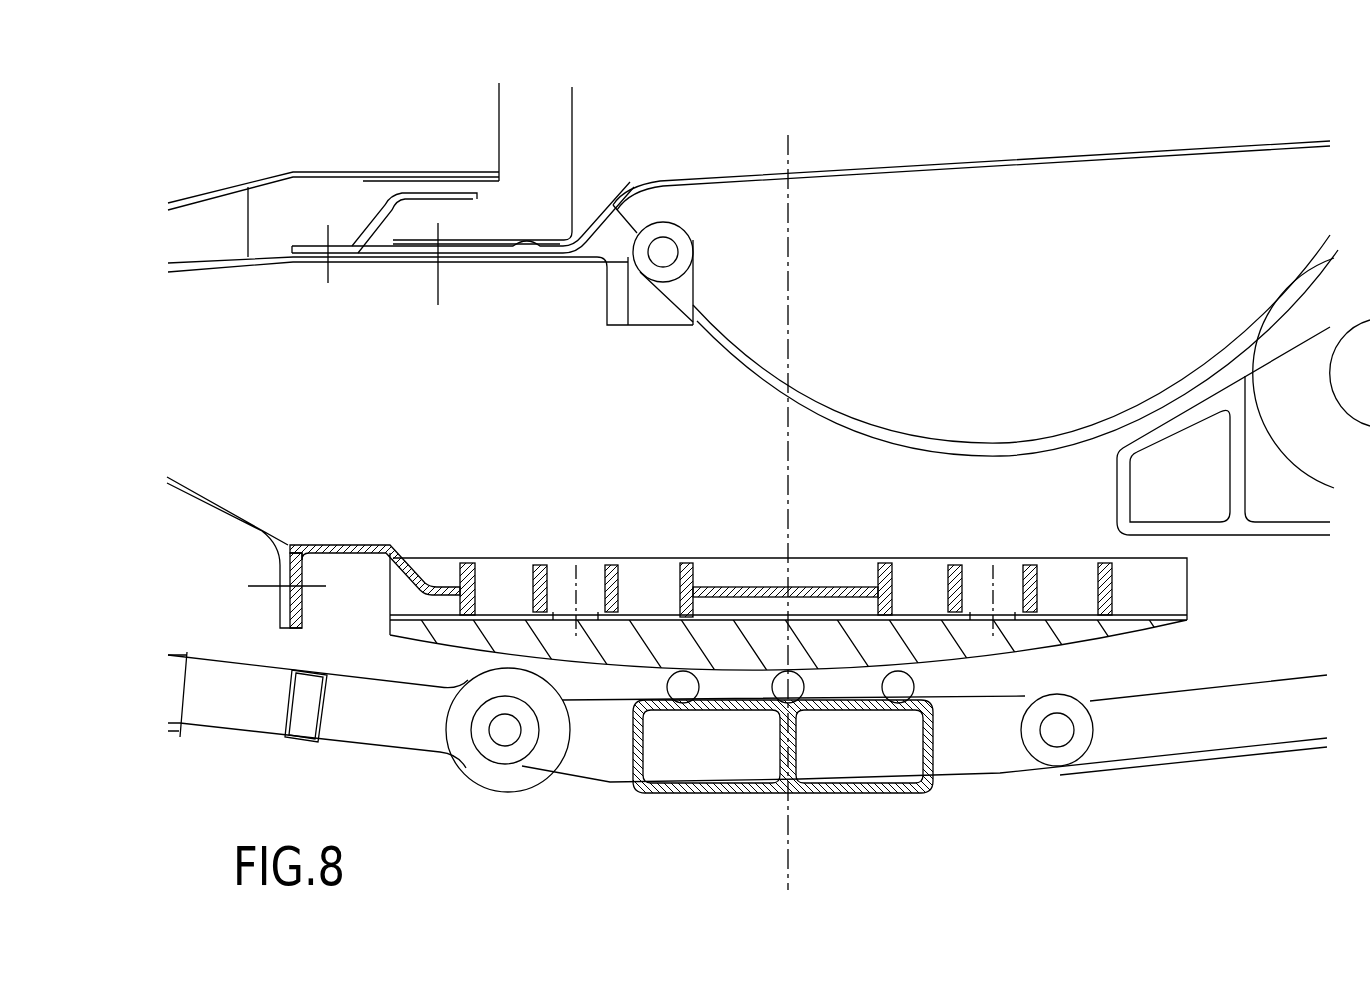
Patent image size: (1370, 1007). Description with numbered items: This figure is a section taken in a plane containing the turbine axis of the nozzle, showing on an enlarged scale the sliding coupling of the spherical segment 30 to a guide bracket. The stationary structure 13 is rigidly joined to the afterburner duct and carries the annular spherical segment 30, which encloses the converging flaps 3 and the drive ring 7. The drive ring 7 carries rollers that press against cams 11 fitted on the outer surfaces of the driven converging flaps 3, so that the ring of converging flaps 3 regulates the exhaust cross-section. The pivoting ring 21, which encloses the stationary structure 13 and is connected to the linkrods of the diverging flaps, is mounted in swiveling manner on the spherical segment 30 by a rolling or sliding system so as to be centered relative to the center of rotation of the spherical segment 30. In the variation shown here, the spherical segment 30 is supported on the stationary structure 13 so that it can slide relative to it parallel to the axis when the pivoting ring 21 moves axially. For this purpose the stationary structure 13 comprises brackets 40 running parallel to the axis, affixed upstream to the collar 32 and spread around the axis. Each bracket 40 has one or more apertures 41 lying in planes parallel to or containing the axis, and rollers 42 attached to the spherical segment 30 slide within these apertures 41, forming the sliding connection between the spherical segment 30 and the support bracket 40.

The converging flaps 3 is at (968, 158).
The drive ring 7 is at (1112, 480).
The cams 11 is at (737, 367).
The stationary structure 13 is at (192, 490).
The pivoting ring 21 is at (692, 793).
The spherical segment 30 is at (1132, 628).
The collar 32 is at (293, 602).
The bracket 40 is at (335, 543).
The apertures 41 is at (492, 577).
The rollers 42 is at (538, 570).